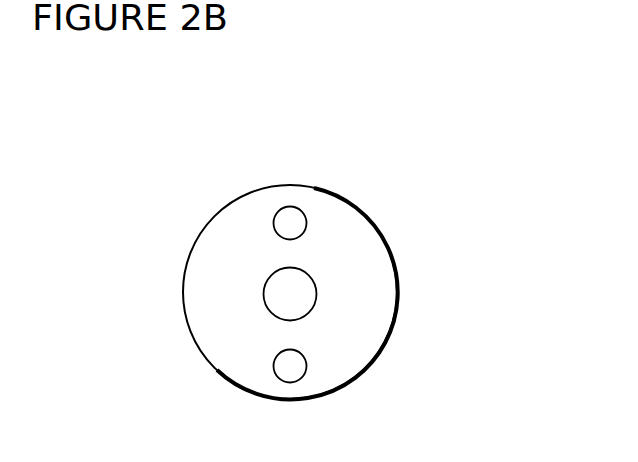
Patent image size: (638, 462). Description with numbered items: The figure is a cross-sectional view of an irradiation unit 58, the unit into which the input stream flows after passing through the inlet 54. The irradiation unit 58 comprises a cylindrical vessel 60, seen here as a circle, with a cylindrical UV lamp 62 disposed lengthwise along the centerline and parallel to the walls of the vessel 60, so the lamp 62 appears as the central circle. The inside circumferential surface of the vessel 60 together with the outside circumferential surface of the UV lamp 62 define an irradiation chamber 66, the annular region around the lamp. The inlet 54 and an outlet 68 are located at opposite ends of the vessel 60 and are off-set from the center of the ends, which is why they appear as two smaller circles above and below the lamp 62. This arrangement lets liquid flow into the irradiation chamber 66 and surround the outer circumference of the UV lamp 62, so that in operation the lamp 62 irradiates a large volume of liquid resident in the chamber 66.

The irradiation unit 58 is at (280, 158).
The cylindrical vessel 60 is at (377, 227).
The irradiation chamber 66 is at (421, 247).
The inlet 54 is at (295, 225).
The UV lamp 62 is at (283, 288).
The outlet 68 is at (292, 367).